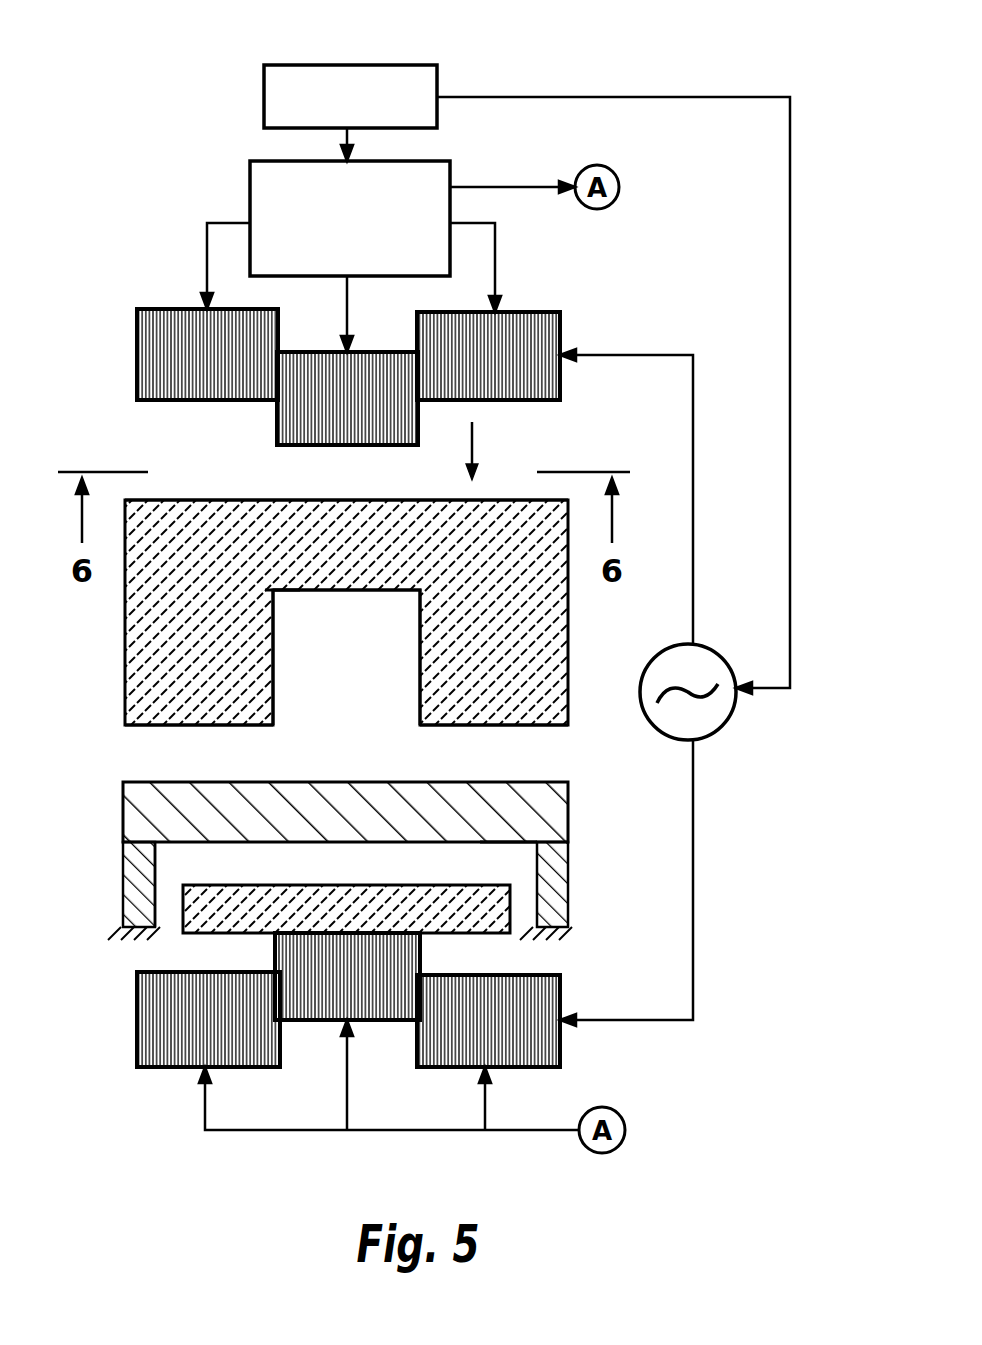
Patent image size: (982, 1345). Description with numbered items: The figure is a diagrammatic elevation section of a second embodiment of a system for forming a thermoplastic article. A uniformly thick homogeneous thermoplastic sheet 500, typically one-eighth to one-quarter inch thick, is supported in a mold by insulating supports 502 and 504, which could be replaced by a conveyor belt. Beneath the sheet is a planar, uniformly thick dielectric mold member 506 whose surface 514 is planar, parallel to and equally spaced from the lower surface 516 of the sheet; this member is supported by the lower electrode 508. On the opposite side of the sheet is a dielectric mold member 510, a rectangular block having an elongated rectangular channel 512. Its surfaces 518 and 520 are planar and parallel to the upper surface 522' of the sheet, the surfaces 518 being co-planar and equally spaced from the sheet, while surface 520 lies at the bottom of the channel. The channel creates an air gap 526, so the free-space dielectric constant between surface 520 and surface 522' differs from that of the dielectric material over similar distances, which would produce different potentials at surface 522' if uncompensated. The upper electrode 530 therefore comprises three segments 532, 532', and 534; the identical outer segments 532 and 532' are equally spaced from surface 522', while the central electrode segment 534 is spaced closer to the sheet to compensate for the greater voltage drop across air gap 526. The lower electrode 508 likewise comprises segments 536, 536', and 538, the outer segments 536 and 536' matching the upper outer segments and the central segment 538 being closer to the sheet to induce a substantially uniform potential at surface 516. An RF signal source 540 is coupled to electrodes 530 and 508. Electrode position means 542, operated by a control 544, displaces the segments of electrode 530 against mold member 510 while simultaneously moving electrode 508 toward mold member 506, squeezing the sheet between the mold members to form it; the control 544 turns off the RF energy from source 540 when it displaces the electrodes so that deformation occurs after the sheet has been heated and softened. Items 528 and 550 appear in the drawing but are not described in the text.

The thermoplastic sheet 500 is at (381, 831).
The insulating support 502 is at (568, 880).
The insulating support 504 is at (155, 868).
The dielectric mold member 506 is at (323, 903).
The electrode 508 is at (430, 1030).
The dielectric mold member 510 is at (323, 554).
The rectangular channel 512 is at (273, 650).
The surface 514 is at (493, 885).
The surface 516 is at (405, 830).
The surfaces 518 is at (197, 725).
The surface 520 is at (273, 590).
The surface 522' is at (493, 790).
The air gap 526 is at (323, 707).
The block upper surface 528 is at (255, 500).
The electrode 530 is at (312, 329).
The electrode segment 532 is at (158, 354).
The electrode segment 532' is at (501, 379).
The central electrode segment 534 is at (277, 415).
The electrode segment 536 is at (193, 1049).
The electrode segment 536' is at (529, 1031).
The electrode segment 538 is at (380, 1023).
The RF signal source 540 is at (705, 735).
The electrode position means 542 is at (250, 183).
The control 544 is at (292, 65).
The electrode movement direction 550 is at (458, 440).